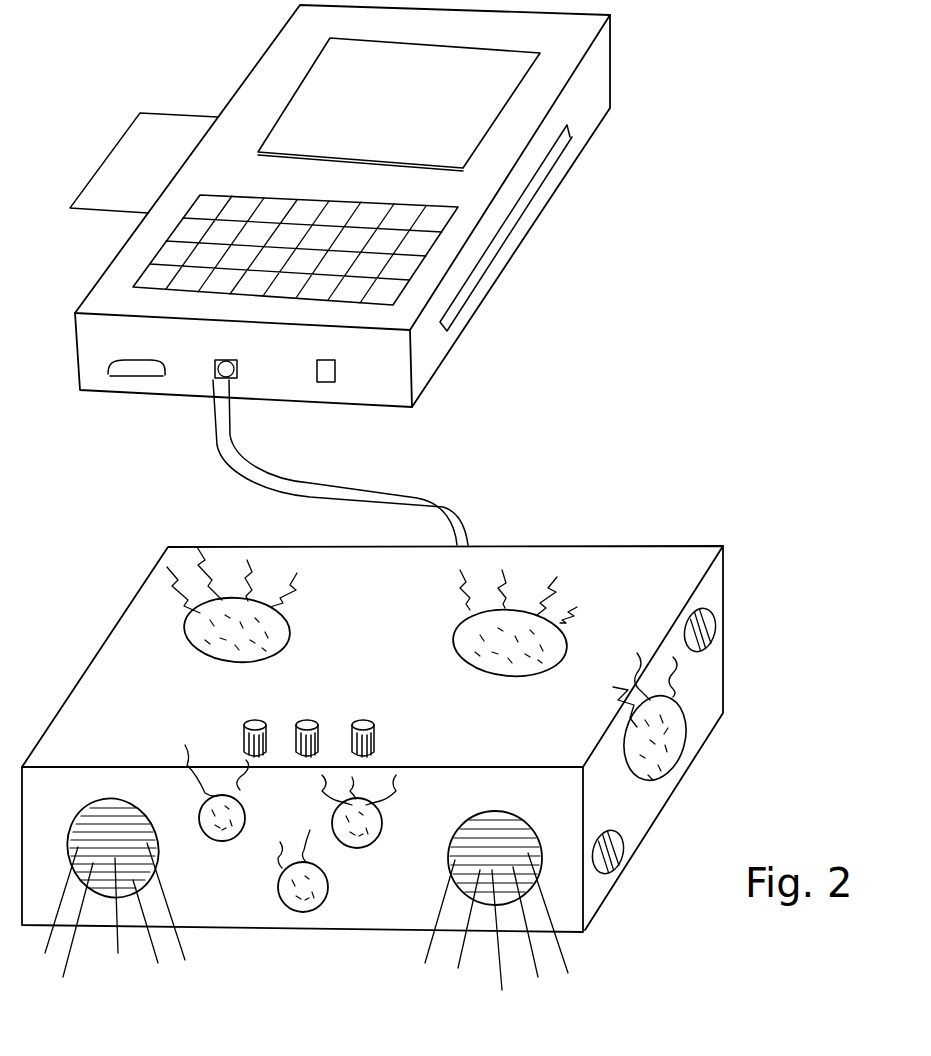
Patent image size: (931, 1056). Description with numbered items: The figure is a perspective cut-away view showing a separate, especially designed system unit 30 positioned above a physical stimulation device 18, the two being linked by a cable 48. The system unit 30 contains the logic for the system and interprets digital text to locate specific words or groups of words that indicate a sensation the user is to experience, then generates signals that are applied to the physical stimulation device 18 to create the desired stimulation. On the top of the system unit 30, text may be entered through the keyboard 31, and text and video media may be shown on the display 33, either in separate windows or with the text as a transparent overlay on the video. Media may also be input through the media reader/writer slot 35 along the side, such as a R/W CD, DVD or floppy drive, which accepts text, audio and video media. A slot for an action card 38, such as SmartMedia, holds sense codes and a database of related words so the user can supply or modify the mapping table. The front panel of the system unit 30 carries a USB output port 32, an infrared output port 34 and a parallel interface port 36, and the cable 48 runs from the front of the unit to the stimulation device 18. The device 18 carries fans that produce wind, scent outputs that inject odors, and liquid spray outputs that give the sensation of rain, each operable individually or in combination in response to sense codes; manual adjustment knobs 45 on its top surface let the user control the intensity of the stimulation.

The physical stimulation device 18 is at (725, 577).
The system unit 30 is at (610, 50).
The keyboard 31 is at (225, 182).
The USB output port 32 is at (218, 352).
The display 33 is at (515, 90).
The infrared output port 34 is at (337, 370).
The media reader/writer slot 35 is at (528, 188).
The parallel interface port 36 is at (120, 360).
The action card 38 is at (175, 117).
The manual adjustment knobs 45 is at (345, 708).
The cable 48 is at (340, 490).